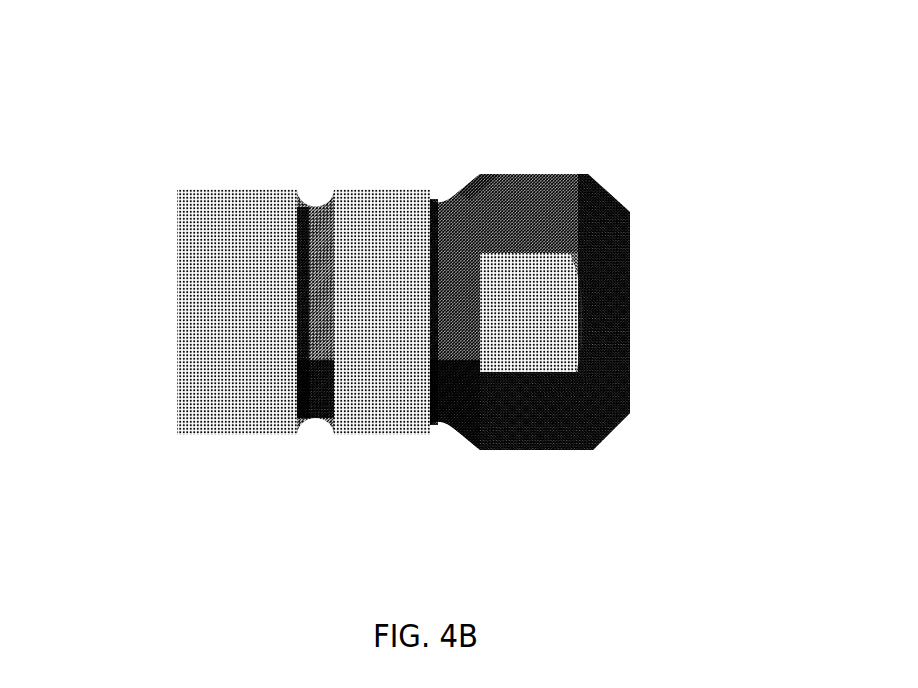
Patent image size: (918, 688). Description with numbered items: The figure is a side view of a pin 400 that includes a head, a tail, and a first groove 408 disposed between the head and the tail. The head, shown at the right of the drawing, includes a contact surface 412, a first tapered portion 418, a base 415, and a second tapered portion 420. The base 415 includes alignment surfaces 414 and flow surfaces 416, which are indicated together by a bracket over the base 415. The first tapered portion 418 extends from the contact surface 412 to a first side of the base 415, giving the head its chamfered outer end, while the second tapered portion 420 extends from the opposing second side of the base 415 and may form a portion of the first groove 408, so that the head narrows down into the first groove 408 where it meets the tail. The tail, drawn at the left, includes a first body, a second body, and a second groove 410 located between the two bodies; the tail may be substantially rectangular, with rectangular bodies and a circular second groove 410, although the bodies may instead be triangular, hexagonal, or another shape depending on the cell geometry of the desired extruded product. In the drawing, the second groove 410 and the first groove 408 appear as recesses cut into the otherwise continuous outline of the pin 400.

The pin 400 is at (135, 440).
The first groove 408 is at (449, 443).
The second groove 410 is at (311, 432).
The contact surface 412 is at (600, 285).
The alignment surfaces 414 is at (523, 288).
The base 415 is at (559, 227).
The flow surfaces 416 is at (548, 202).
The first tapered portion 418 is at (613, 200).
The second tapered portion 420 is at (472, 188).